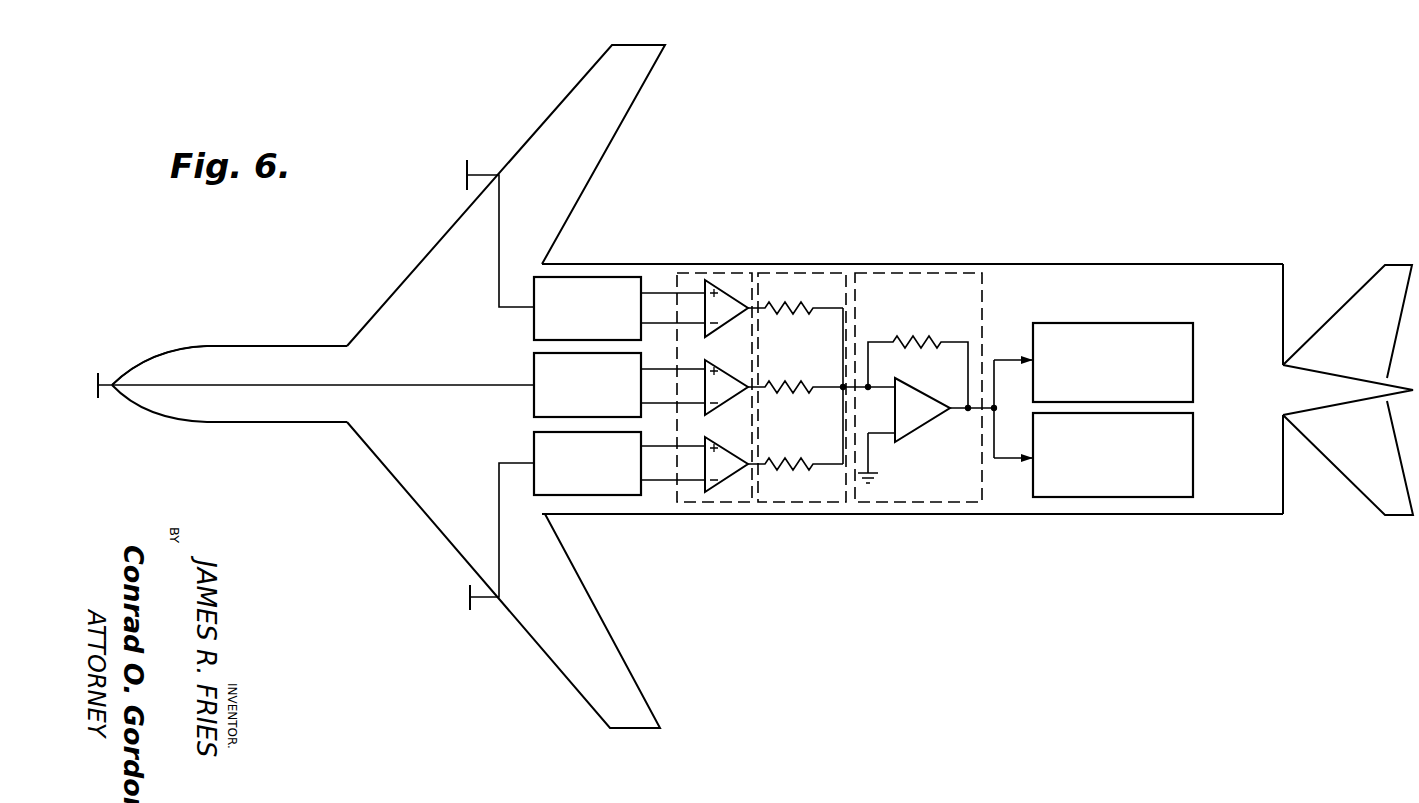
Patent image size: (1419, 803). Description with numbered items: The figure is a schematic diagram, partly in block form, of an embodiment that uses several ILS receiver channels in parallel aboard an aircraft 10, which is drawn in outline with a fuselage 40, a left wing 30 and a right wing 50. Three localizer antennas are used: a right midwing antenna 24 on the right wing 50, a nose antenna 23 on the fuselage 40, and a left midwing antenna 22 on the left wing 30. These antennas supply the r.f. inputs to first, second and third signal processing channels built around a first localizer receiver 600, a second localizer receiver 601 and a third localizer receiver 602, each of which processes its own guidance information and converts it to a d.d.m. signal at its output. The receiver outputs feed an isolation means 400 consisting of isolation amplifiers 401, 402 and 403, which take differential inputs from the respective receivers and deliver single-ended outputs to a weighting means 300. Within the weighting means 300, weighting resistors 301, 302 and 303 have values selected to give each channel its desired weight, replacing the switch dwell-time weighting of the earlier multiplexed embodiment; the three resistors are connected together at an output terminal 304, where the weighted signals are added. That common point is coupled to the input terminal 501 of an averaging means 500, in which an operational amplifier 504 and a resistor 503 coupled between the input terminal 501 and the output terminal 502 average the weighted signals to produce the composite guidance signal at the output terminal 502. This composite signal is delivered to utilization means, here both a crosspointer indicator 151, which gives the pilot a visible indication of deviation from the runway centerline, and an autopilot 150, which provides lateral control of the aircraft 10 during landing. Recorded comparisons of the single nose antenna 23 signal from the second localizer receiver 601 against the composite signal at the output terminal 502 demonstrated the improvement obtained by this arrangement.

The aircraft 10 is at (322, 414).
The left midwing antenna 22 is at (472, 608).
The nose antenna 23 is at (98, 372).
The right midwing antenna 24 is at (467, 176).
The left wing 30 is at (398, 481).
The fuselage 40 is at (134, 369).
The right wing 50 is at (392, 288).
The autopilot 150 is at (1193, 462).
The crosspointer indicator 151 is at (1193, 373).
The weighting means 300 is at (846, 264).
The weighting resistor 301 is at (793, 310).
The weighting resistor 302 is at (798, 389).
The weighting resistor 303 is at (808, 462).
The output terminal of weighting means 304 is at (843, 384).
The isolation means 400 is at (734, 280).
The isolation amplifier 401 is at (708, 337).
The isolation amplifier 402 is at (710, 408).
The isolation amplifier 403 is at (730, 446).
The averaging means 500 is at (984, 280).
The input terminal 501 is at (868, 387).
The output terminal 502 is at (968, 412).
The resistor 503 is at (919, 340).
The operational amplifier 504 is at (936, 398).
The first localizer receiver 600 is at (573, 277).
The second localizer receiver 601 is at (534, 364).
The third localizer receiver 602 is at (534, 443).